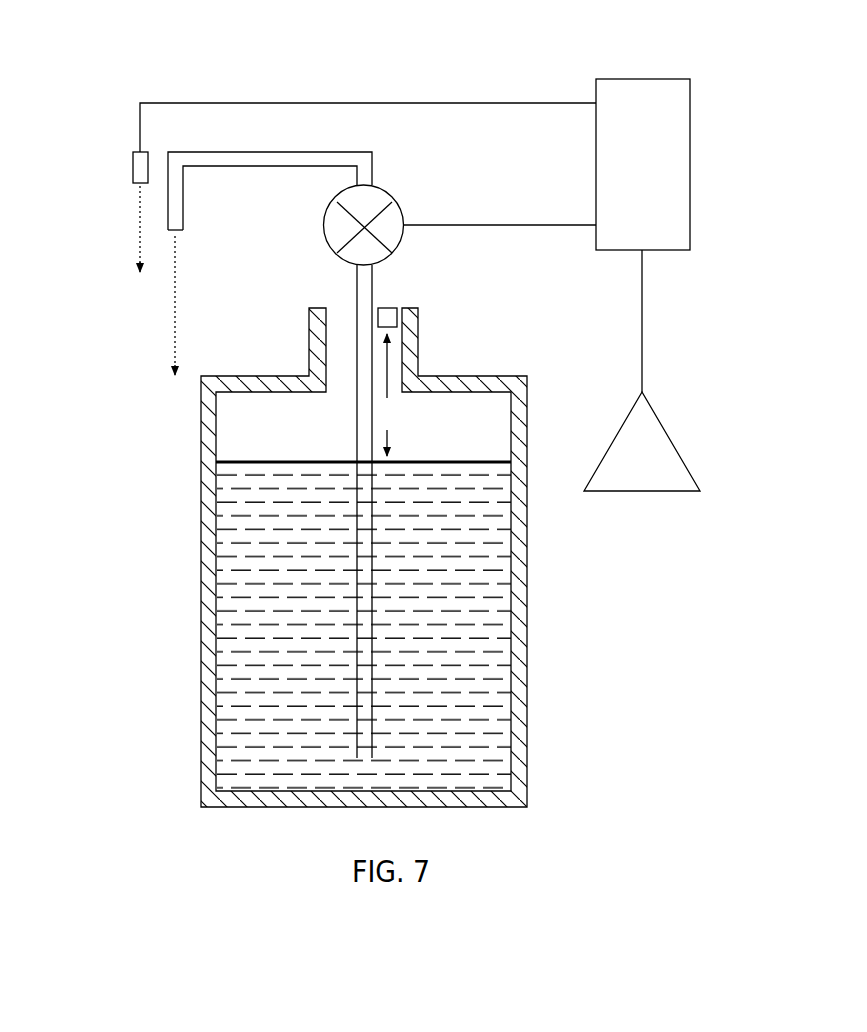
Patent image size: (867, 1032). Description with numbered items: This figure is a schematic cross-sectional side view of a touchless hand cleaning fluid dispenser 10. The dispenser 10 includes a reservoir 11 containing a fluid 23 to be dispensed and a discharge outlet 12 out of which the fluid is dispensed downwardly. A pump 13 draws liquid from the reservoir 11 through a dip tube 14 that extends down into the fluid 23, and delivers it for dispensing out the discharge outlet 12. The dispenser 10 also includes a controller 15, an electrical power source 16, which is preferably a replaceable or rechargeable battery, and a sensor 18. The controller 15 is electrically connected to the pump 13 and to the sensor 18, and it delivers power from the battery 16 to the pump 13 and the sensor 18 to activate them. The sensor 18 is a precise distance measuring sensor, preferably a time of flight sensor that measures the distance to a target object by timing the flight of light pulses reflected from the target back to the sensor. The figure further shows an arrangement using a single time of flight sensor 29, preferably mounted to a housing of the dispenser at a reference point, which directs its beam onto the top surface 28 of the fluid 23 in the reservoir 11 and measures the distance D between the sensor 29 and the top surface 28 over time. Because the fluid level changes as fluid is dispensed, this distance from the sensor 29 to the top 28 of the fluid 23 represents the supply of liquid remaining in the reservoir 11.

The fluid dispenser 10 is at (133, 52).
The reservoir 11 is at (207, 510).
The discharge outlet 12 is at (173, 233).
The pump 13 is at (395, 215).
The dip tube 14 is at (365, 648).
The controller 15 is at (682, 157).
The electrical power source 16 is at (663, 442).
The sensor 18 is at (135, 175).
The fluid 23 is at (485, 670).
The top surface 28 is at (492, 457).
The time of flight sensor 29 is at (388, 307).